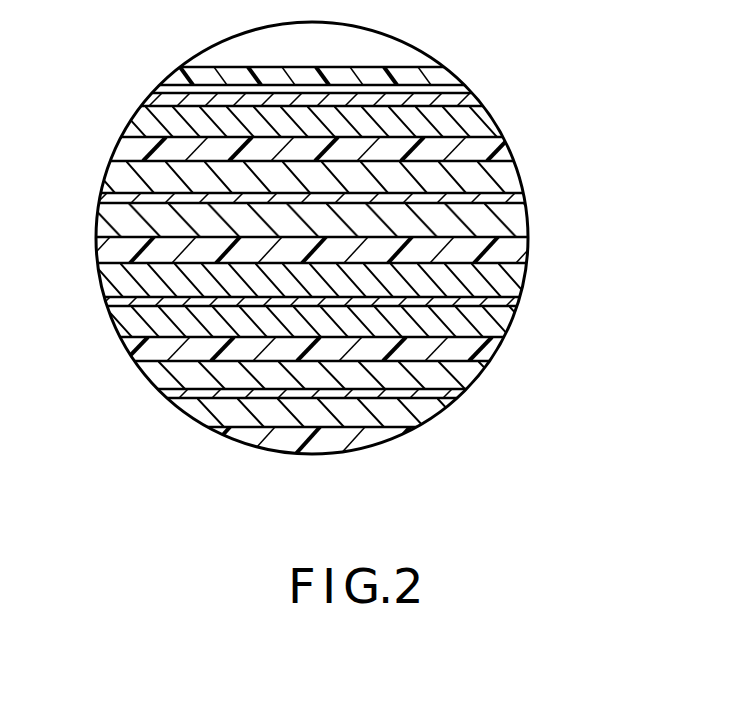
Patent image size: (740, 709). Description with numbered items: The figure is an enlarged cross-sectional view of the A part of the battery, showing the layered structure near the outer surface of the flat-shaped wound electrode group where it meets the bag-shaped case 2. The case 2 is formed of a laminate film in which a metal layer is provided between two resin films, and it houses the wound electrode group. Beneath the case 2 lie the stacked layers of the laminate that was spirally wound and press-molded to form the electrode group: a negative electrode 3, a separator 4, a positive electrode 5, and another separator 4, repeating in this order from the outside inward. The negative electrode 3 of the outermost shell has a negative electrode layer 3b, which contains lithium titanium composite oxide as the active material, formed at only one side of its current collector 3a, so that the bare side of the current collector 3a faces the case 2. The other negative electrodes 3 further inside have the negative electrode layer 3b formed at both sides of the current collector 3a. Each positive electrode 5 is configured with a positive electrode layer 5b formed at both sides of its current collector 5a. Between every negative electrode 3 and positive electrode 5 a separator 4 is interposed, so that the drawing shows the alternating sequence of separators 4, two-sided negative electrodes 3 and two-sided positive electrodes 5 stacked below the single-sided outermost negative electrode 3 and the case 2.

The A part A is at (210, 57).
The bag-shaped case 2 is at (443, 73).
The negative electrode 3 is at (365, 211).
The current collector 3a is at (477, 98).
The negative electrode layer 3b is at (347, 233).
The separator 4 is at (127, 150).
The positive electrode 5 is at (365, 317).
The current collector 5a is at (507, 202).
The positive electrode layer 5b is at (502, 170).